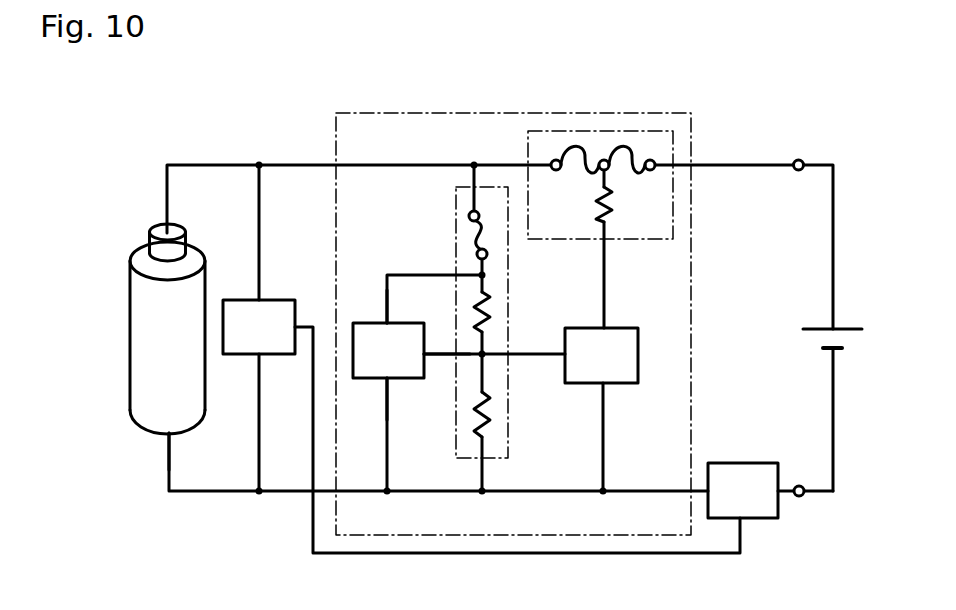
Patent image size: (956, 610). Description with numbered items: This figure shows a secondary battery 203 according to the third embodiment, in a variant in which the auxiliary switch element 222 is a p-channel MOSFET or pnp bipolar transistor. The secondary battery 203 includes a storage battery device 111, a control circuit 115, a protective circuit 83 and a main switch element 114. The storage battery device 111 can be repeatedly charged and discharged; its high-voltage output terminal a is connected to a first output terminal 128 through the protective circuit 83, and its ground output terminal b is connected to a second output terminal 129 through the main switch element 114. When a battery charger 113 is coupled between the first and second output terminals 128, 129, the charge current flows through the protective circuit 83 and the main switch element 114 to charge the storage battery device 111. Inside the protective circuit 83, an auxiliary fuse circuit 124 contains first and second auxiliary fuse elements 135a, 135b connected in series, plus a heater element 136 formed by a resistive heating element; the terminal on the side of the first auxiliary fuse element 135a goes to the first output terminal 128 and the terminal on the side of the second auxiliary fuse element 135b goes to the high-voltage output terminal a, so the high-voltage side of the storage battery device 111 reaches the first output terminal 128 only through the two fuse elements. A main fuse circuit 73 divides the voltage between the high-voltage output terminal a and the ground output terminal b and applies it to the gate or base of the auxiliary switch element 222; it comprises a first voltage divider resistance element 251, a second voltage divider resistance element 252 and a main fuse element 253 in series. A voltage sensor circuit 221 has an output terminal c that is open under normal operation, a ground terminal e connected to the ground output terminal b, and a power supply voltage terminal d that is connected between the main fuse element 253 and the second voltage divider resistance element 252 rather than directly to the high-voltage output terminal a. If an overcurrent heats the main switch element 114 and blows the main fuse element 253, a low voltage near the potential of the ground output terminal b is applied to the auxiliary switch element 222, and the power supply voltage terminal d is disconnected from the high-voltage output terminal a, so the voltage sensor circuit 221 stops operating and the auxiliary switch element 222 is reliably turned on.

The secondary battery 203 is at (268, 98).
The storage battery device 111 is at (137, 243).
The high-voltage output terminal a is at (169, 229).
The ground output terminal b is at (169, 437).
The control circuit 115 is at (233, 355).
The temperature detection circuit 83 is at (458, 112).
The main fuse circuit 73 is at (508, 262).
The auxiliary fuse circuit 124 is at (674, 138).
The main fuse element 253 is at (466, 235).
The second voltage divider resistance element 252 is at (493, 313).
The first voltage divider resistance element 251 is at (495, 420).
The voltage sensor circuit 221 is at (367, 322).
The auxiliary switch element 222 is at (639, 338).
The power supply voltage terminal d is at (389, 322).
The ground terminal e is at (383, 380).
The output terminal c is at (425, 356).
The second auxiliary fuse element 135b is at (558, 146).
The first auxiliary fuse element 135a is at (629, 147).
The heater element 136 is at (614, 207).
The first output terminal 128 is at (799, 158).
The second output terminal 129 is at (800, 497).
The battery charger 113 is at (820, 325).
The main switch element 114 is at (755, 462).